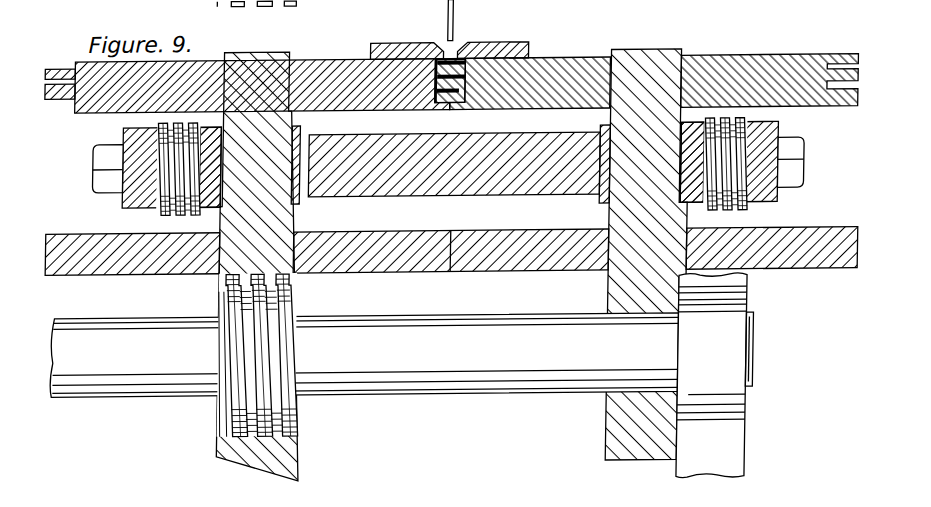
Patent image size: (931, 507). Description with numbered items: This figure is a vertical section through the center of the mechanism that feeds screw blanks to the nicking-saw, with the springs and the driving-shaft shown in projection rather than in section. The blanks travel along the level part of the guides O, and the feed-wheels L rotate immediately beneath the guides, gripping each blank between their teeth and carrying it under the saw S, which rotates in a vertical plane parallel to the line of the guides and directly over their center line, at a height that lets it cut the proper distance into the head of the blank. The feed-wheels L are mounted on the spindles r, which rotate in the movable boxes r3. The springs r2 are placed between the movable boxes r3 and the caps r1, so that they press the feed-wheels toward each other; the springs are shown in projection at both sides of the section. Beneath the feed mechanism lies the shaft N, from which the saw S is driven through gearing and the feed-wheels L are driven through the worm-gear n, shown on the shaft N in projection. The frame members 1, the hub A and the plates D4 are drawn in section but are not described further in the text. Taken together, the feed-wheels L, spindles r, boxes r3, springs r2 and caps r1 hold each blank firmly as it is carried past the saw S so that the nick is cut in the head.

The frame plate ends 1 is at (452, 76).
The nicking-saw S is at (447, 51).
The guides O is at (449, 41).
The feed-wheels L is at (343, 85).
The worm-gear n is at (258, 219).
The spindles r is at (453, 265).
The caps r1 is at (448, 164).
The springs r2 is at (452, 177).
The movable boxes r3 is at (451, 164).
The shaft block A is at (450, 164).
The lower plate D4 is at (451, 251).
The shaft N is at (401, 378).